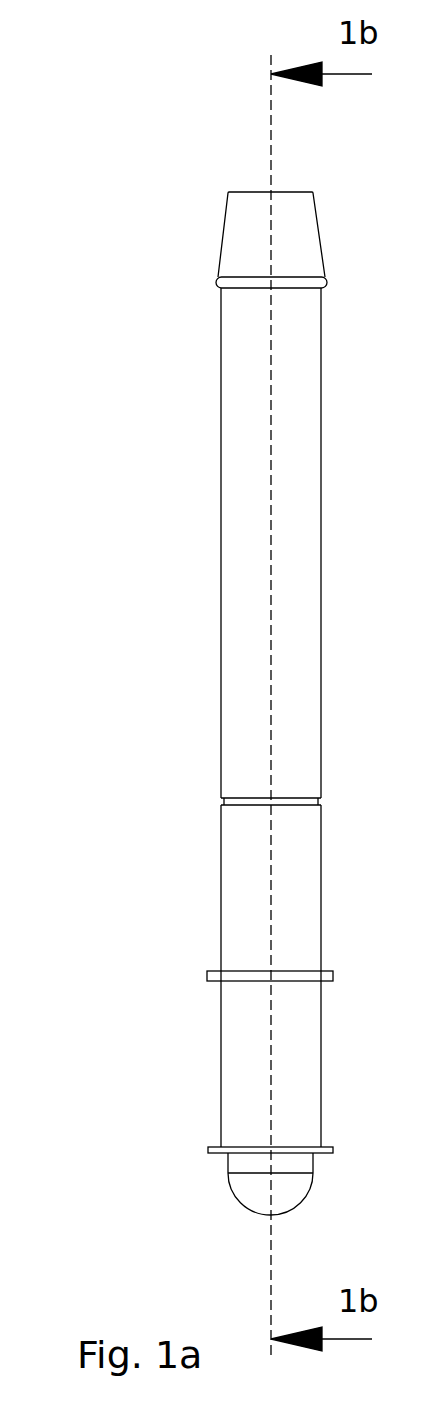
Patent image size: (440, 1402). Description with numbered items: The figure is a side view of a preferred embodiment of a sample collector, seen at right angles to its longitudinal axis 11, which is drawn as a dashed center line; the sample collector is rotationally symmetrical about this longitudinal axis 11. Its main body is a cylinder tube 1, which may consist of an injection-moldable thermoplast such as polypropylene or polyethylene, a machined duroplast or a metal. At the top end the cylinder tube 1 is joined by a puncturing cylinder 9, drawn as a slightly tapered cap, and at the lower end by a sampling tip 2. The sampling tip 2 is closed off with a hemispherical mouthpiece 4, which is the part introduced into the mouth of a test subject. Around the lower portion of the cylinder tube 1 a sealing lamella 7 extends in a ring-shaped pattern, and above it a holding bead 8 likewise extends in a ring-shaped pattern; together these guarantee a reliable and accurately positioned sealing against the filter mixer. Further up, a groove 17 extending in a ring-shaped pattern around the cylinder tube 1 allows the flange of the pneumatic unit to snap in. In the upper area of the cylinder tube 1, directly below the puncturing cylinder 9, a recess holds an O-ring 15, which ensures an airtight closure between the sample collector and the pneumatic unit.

The cylinder tube 1 is at (232, 562).
The sampling tip 2 is at (242, 1162).
The hemispherical mouthpiece 4 is at (249, 1187).
The sealing lamella 7 is at (325, 1147).
The holding bead 8 is at (209, 977).
The puncturing cylinder 9 is at (228, 220).
The longitudinal axis 11 is at (271, 380).
The O-ring 15 is at (222, 286).
The groove 17 is at (308, 800).